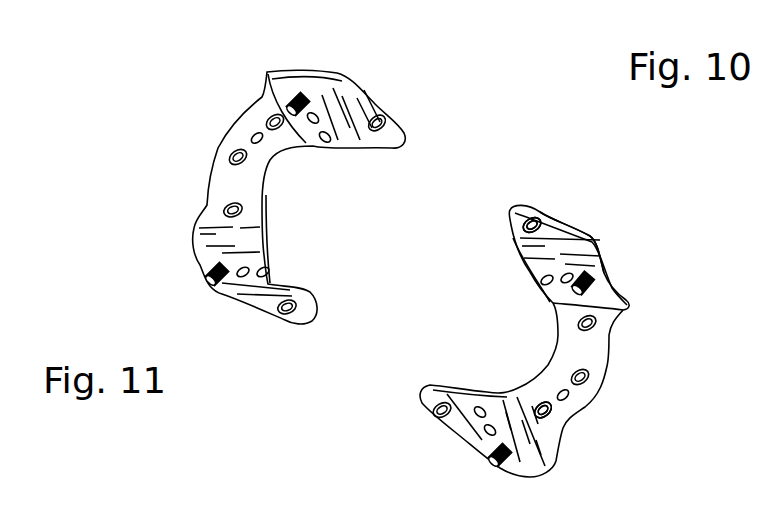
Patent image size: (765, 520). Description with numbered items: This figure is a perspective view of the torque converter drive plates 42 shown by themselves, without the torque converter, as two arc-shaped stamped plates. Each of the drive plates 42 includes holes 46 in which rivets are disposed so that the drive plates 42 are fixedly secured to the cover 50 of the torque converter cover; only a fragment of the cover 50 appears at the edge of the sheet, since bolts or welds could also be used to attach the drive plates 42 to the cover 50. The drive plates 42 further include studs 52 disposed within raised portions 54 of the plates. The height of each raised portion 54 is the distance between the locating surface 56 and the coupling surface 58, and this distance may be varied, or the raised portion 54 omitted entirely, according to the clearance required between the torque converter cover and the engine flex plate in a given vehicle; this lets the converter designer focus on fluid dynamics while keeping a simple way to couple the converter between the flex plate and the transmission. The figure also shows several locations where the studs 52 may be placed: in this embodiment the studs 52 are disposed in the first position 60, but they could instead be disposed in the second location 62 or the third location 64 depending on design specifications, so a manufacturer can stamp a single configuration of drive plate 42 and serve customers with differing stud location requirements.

The cover 50 is at (678, 0).
The torque converter drive plates 42 is at (590, 353).
The holes 46 is at (553, 430).
The studs 52 is at (522, 477).
The raised portions 54 is at (600, 260).
The locating surface 56 is at (555, 210).
The coupling surface 58 is at (614, 280).
The first position 60 is at (317, 103).
The second location 62 is at (322, 121).
The third location 64 is at (357, 154).